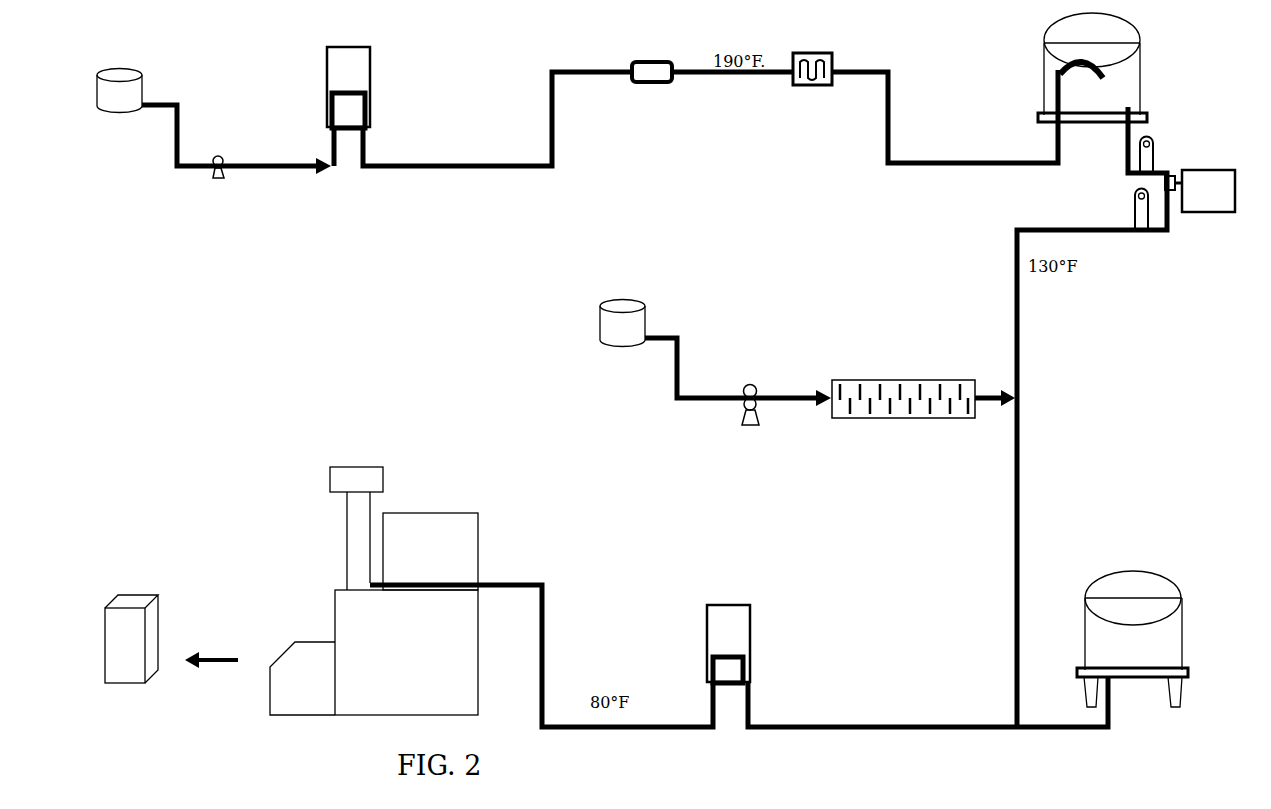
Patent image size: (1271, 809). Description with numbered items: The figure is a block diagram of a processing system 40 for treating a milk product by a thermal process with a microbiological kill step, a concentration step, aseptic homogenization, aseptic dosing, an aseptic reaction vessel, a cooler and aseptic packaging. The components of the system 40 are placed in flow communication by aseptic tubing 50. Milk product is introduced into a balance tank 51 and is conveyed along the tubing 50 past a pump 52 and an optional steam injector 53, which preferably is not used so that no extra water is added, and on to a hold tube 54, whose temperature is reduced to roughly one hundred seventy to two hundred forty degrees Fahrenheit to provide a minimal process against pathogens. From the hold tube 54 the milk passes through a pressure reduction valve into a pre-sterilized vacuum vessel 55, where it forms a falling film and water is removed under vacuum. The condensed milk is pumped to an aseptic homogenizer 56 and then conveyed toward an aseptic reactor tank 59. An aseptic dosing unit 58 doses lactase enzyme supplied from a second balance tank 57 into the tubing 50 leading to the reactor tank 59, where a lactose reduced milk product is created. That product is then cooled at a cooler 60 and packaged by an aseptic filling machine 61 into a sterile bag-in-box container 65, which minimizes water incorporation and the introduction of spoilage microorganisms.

The processing system 40 is at (224, 298).
The aseptic tubing 50 is at (300, 160).
The balance tank 51 is at (118, 113).
The pump 52 is at (370, 106).
The steam injector 53 is at (651, 62).
The hold tube 54 is at (833, 57).
The vacuum vessel 55 is at (1043, 51).
The aseptic homogenizer 56 is at (1206, 215).
The balance tank 57 is at (625, 347).
The aseptic dosing unit 58 is at (903, 420).
The aseptic reactor tank 59 is at (1132, 570).
The cooler 60 is at (753, 675).
The aseptic filling machine 61 is at (478, 553).
The bag-in-box container 65 is at (162, 632).